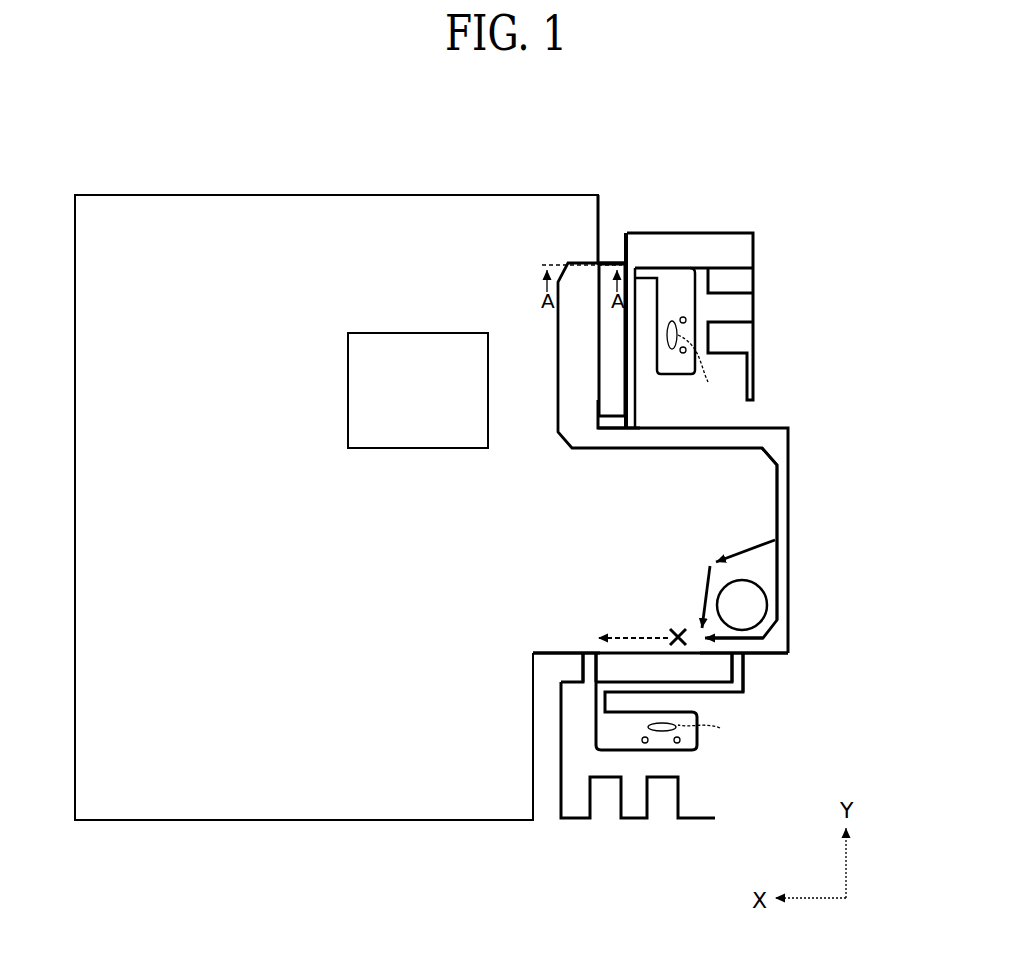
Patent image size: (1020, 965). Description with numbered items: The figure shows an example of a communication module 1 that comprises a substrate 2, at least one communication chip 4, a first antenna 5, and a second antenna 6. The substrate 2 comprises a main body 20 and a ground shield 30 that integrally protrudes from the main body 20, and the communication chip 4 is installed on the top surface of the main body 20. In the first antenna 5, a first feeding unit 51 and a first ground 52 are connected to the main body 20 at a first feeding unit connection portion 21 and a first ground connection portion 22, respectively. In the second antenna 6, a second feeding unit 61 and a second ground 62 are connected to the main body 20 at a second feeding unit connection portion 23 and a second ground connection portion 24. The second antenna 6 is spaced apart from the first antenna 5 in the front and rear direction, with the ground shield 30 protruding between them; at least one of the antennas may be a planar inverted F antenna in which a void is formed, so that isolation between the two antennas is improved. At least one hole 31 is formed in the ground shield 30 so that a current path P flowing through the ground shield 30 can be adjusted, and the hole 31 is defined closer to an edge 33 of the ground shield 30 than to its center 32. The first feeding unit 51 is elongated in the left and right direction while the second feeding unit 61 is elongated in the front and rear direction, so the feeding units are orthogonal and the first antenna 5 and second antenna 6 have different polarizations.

The communication module 1 is at (873, 230).
The substrate 2 is at (532, 195).
The communication chip 4 is at (419, 352).
The first antenna 5 is at (725, 420).
The second antenna 6 is at (666, 738).
The main body 20 is at (255, 253).
The first feeding unit connection portion 21 is at (588, 255).
The first ground connection portion 22 is at (585, 422).
The second feeding unit connection portion 23 is at (587, 647).
The second ground connection portion 24 is at (737, 648).
The ground shield 30 is at (705, 454).
The hole 31 is at (766, 593).
The center 32 is at (655, 532).
The edge 33 is at (780, 545).
The first feeding unit 51 is at (607, 260).
The first ground 52 is at (610, 418).
The second feeding unit 61 is at (590, 668).
The second ground 62 is at (737, 663).
The current path P is at (780, 467).